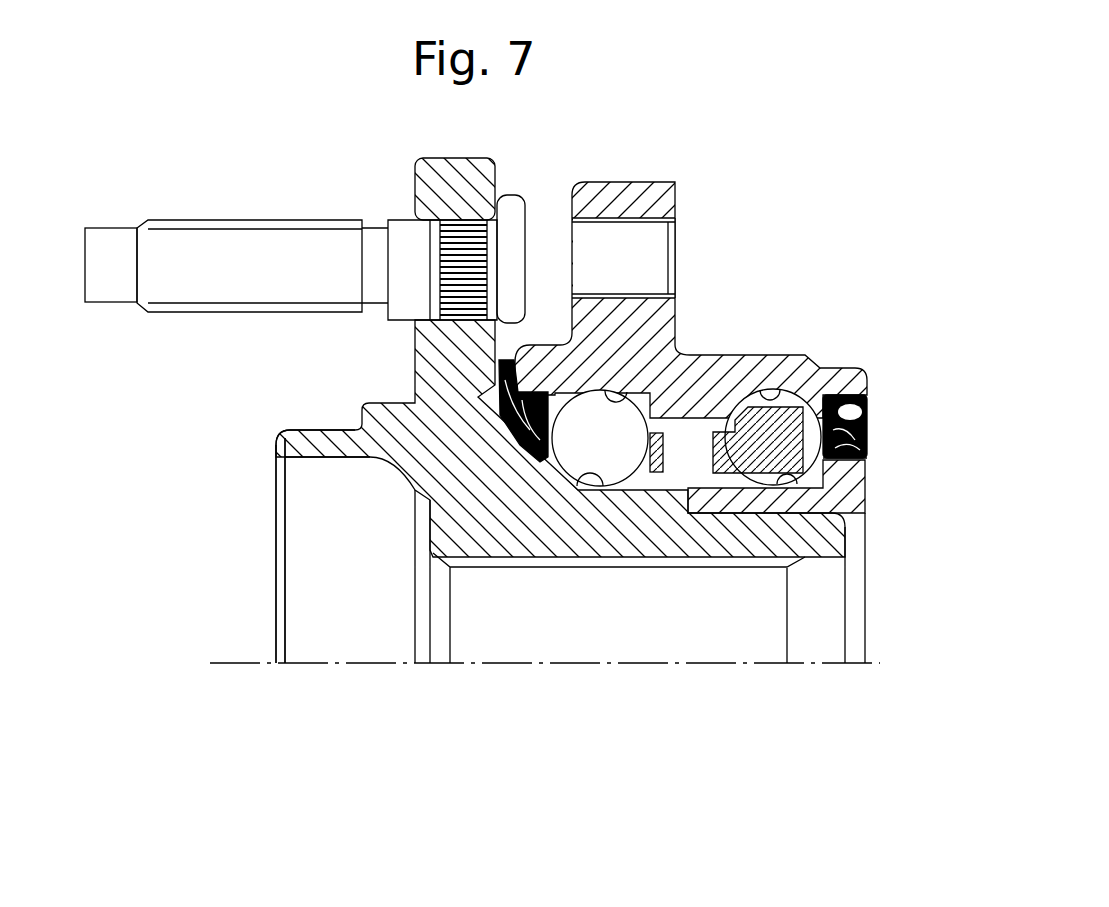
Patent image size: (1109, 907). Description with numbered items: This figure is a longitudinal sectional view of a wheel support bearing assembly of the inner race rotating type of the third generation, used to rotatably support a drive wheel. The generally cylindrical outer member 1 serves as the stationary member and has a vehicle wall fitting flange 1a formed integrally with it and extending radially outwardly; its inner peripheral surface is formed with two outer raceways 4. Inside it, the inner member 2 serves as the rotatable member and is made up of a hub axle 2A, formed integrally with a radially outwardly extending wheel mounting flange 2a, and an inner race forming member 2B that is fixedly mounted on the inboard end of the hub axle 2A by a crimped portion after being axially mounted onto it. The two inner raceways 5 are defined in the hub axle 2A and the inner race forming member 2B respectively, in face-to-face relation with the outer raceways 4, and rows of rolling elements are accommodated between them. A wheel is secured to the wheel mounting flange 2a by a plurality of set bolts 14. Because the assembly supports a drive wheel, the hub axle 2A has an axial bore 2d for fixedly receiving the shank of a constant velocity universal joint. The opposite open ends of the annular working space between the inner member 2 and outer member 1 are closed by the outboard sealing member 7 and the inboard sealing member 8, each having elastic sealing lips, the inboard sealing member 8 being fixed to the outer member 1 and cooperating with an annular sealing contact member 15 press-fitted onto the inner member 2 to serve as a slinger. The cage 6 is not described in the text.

The set bolts 14 is at (249, 245).
The wheel mounting flange 2a is at (463, 170).
The vehicle wall fitting flange 1a is at (653, 185).
The outer member 1 is at (691, 280).
The outboard sealing member 7 is at (505, 378).
The outer raceways 4 is at (640, 392).
The inboard sealing member 8 is at (870, 410).
The annular sealing contact member 15 is at (872, 437).
The cage 6 is at (793, 460).
The inner raceways 5 is at (580, 484).
The inner member 2 is at (570, 569).
The hub axle 2A is at (523, 533).
The inner race forming member 2B is at (747, 507).
The axial bore 2d is at (478, 640).